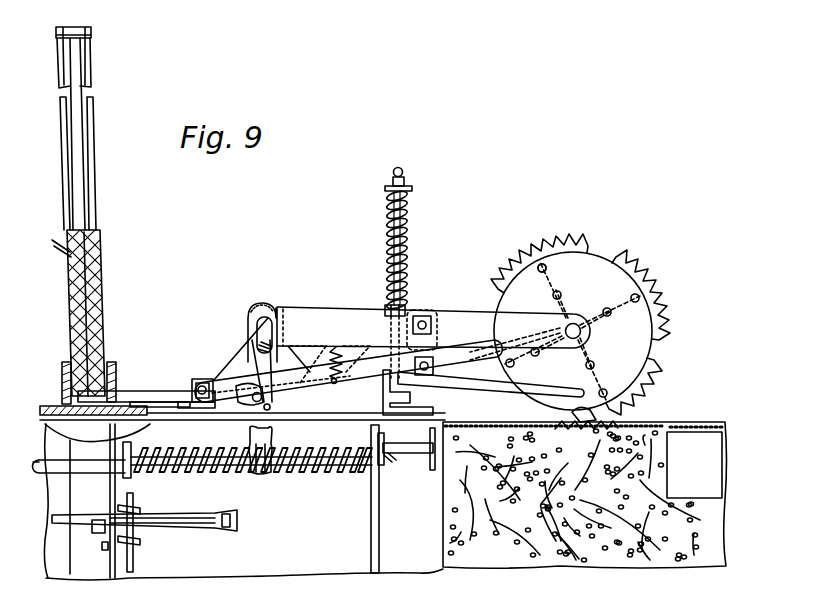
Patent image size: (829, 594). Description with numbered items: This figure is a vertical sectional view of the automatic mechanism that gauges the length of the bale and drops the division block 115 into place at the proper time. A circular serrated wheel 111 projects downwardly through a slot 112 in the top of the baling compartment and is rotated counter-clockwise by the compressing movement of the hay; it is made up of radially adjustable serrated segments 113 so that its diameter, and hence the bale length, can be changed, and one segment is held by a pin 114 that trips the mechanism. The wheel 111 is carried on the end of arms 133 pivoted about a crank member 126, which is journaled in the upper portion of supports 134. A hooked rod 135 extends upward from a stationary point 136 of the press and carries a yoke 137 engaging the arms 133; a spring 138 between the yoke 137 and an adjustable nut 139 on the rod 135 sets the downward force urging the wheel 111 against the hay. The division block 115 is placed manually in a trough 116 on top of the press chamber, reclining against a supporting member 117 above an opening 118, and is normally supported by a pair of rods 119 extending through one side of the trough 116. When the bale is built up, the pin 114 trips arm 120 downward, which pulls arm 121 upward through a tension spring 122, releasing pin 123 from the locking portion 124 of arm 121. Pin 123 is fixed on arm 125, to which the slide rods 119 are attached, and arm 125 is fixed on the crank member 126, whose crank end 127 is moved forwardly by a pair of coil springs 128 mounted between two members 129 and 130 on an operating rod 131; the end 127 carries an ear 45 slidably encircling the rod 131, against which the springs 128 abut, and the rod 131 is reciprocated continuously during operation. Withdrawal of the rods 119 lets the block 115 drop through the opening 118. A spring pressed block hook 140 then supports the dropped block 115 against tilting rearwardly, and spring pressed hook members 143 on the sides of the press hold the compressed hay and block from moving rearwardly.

The ear 45 is at (260, 477).
The circular serrated wheel 111 is at (602, 260).
The slot 112 is at (634, 421).
The radially adjustable serrated segments 113 is at (666, 310).
The pin 114 is at (548, 268).
The division block 115 is at (96, 214).
The trough 116 is at (113, 362).
The supporting member 117 is at (62, 381).
The opening 118 is at (46, 421).
The rods 119 is at (142, 393).
The arm 120 is at (466, 387).
The arm 121 is at (337, 369).
The tension spring 122 is at (330, 358).
The pin 123 is at (265, 360).
The locking portion 124 is at (258, 392).
The arm 125 is at (216, 380).
The crank member 126 is at (272, 312).
The crank end 127 is at (258, 345).
The coil springs 128 is at (226, 474).
The member 129 is at (380, 472).
The member 130 is at (138, 456).
The operating rod 131 is at (428, 455).
The arms 133 is at (452, 308).
The supports 134 is at (236, 346).
The hooked rod 135 is at (404, 179).
The stationary point 136 is at (410, 380).
The yoke 137 is at (404, 305).
The spring 138 is at (387, 242).
The adjustable nut 139 is at (386, 188).
The block hook 140 is at (81, 516).
The spring pressed hook members 143 is at (233, 530).